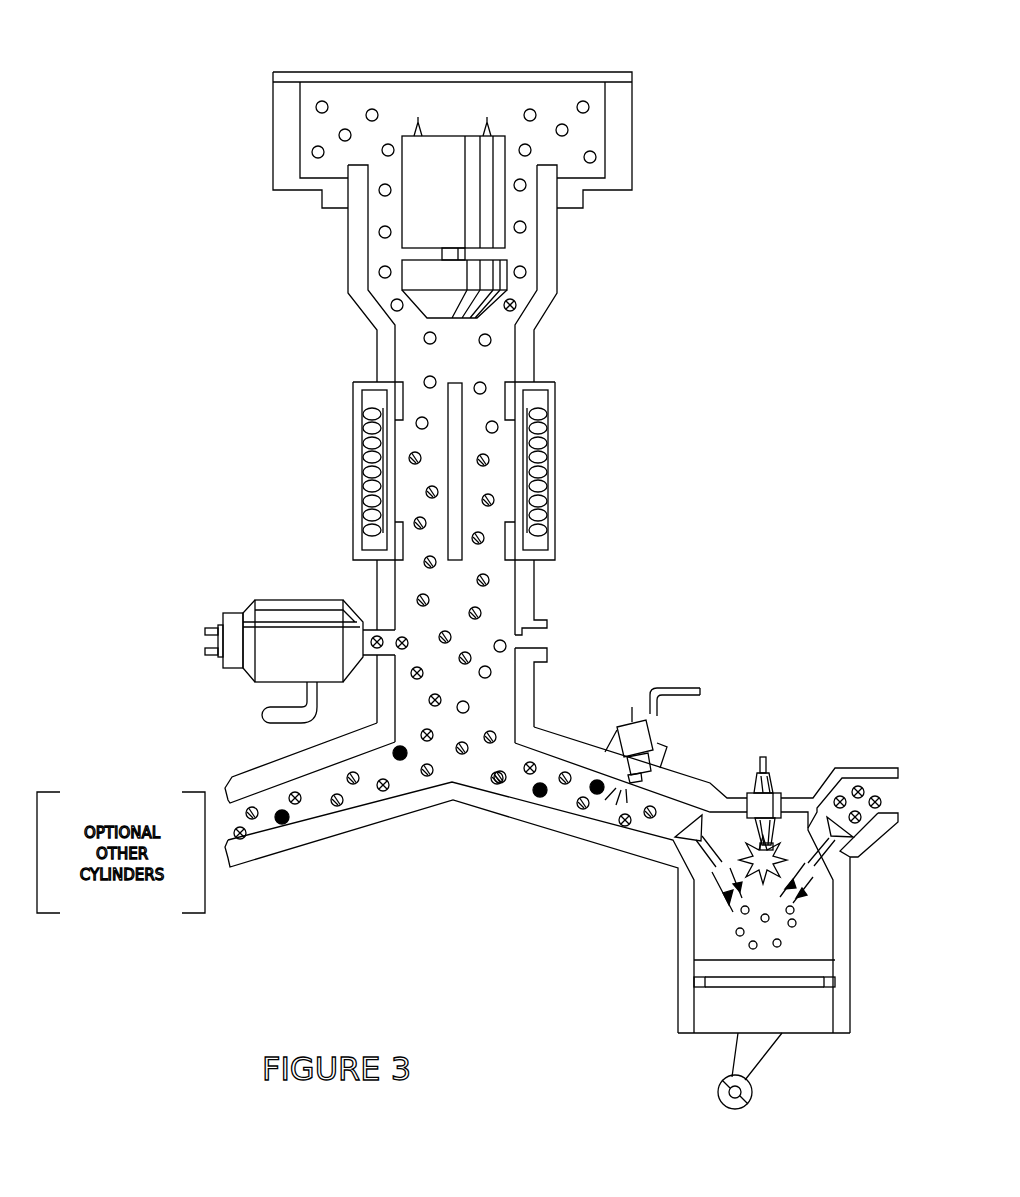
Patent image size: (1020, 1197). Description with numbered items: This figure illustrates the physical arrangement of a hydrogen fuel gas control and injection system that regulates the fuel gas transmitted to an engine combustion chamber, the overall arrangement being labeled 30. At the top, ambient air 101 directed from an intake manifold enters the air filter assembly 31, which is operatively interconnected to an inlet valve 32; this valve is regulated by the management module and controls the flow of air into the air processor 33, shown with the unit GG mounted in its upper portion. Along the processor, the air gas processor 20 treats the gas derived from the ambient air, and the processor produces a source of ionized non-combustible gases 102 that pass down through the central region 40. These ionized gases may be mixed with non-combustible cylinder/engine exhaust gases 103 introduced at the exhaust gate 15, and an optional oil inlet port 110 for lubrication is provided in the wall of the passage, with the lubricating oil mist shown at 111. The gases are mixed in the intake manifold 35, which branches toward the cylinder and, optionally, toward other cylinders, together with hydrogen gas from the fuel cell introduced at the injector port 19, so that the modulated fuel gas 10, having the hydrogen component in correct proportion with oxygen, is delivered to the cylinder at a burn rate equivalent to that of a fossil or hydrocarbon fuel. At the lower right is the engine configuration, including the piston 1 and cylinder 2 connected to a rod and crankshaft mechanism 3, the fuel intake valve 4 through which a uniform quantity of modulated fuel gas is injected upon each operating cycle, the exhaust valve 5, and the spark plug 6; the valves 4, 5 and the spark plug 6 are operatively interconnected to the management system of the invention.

The engine system 30 is at (207, 47).
The air filter assembly 31 is at (612, 127).
The ambient air 101 is at (312, 150).
The gas generator GG is at (477, 193).
The inlet valve 32 is at (427, 273).
The air processor 33 is at (525, 372).
The air gas processor 20 is at (560, 447).
The ionized non-combustible gases 102 is at (427, 490).
The mixing chamber 40 is at (630, 495).
The oil inlet port 110 is at (545, 632).
The exhaust gate 15 is at (273, 647).
The exhaust gases 103 is at (255, 712).
The intake manifold 35 is at (355, 818).
The lubricating oil mist 111 is at (538, 813).
The injector port 19 is at (627, 745).
The fuel gas 10 is at (637, 793).
The exhaust valve 5 is at (677, 680).
The spark plug 6 is at (767, 782).
The fuel intake valve 4 is at (682, 840).
The cylinder 2 is at (687, 943).
The piston 1 is at (707, 1005).
The rod and crankshaft mechanism 3 is at (720, 1090).